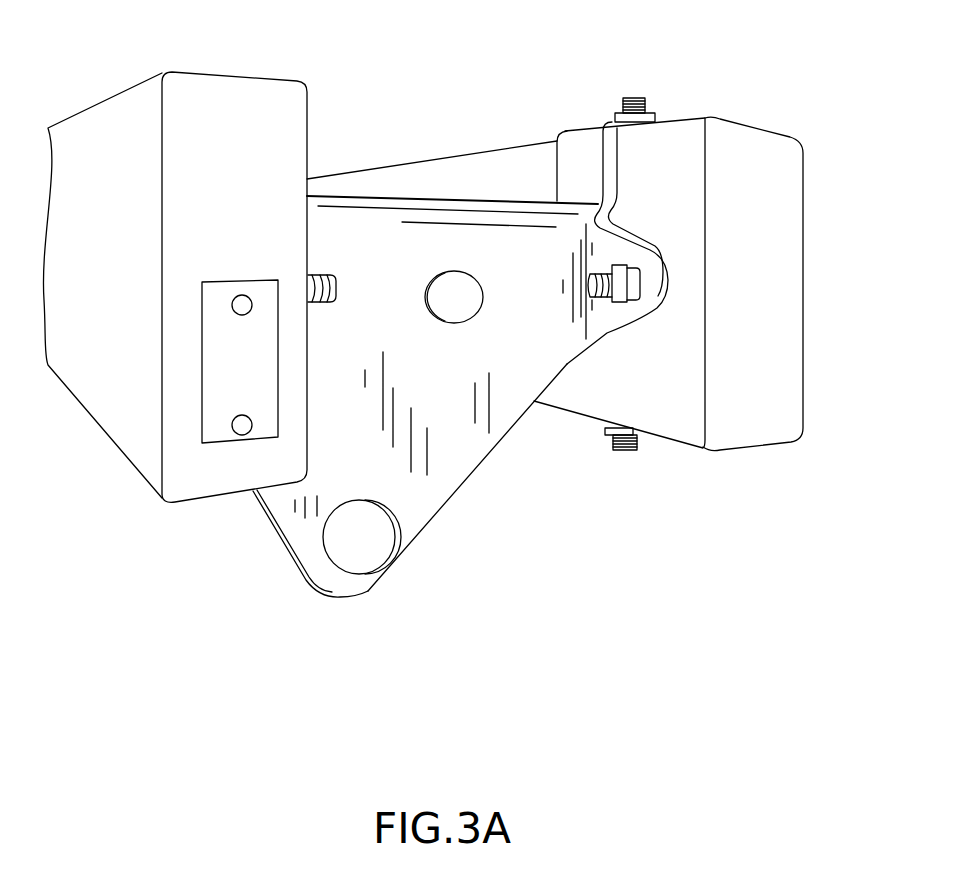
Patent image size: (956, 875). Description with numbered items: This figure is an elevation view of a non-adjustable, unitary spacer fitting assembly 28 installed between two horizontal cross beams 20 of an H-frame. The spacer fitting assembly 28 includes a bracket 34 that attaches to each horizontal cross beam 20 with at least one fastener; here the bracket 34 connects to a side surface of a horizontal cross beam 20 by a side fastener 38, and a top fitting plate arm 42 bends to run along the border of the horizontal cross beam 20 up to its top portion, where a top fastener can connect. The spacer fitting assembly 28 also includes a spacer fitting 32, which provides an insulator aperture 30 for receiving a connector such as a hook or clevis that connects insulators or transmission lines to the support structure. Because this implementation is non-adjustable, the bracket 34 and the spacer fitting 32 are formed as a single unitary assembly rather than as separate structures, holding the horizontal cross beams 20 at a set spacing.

The horizontal cross beam 20 is at (262, 95).
The spacer fitting assembly 28 is at (418, 196).
The insulator aperture 30 is at (362, 552).
The spacer fitting 32 is at (475, 447).
The bracket 34 is at (602, 243).
The side fastener 38 is at (628, 304).
The top fitting plate arm 42 is at (652, 113).